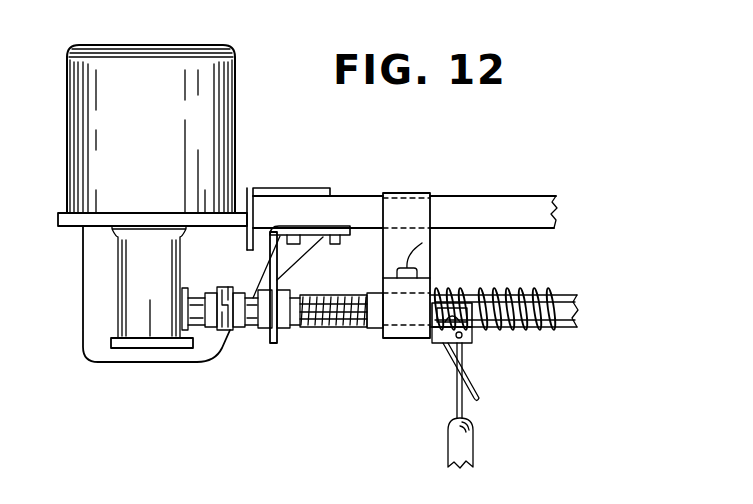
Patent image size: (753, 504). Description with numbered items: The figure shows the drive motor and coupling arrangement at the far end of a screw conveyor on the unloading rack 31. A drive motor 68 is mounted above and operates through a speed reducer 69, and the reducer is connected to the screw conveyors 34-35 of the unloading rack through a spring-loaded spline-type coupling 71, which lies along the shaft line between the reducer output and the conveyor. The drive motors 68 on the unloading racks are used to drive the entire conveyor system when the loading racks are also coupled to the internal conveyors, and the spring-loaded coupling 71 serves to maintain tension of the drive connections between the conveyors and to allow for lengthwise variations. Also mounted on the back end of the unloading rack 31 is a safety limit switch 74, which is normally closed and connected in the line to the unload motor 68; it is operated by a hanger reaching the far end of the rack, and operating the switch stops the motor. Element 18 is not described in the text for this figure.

The drive motor 68 is at (160, 146).
The speed reducer 69 is at (160, 295).
The spring-loaded spline-type coupling 71 is at (358, 345).
The safety limit switch 74 is at (400, 335).
The unloading rack 31 is at (485, 190).
The screw conveyors 34-35 is at (566, 292).
The pendant arm 18 is at (468, 358).